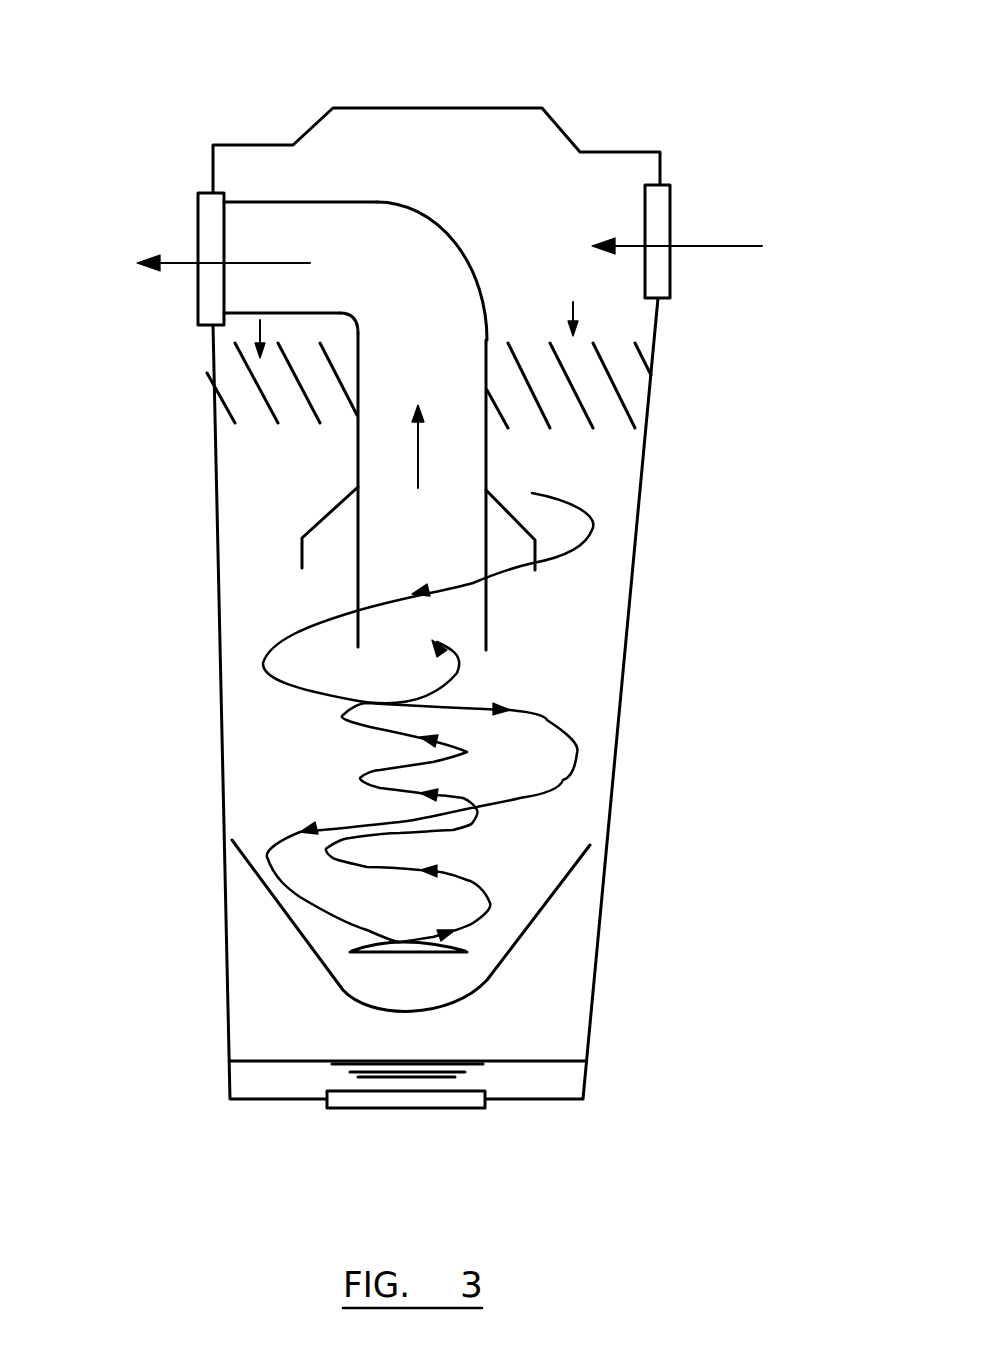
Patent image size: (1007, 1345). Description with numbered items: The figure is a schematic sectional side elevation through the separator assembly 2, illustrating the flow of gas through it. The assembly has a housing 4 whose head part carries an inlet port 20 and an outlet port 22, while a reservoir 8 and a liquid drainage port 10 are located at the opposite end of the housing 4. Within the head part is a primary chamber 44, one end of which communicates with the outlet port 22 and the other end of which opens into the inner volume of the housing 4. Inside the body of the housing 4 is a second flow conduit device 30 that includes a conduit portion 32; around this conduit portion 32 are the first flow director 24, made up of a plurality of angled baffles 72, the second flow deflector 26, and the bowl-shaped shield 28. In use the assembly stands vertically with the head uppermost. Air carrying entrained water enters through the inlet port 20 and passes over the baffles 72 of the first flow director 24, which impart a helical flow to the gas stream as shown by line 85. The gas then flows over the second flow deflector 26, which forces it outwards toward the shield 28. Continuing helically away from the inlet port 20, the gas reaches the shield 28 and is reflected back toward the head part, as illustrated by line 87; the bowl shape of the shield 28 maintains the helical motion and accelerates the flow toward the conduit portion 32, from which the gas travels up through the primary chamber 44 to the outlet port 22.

The separator assembly 2 is at (597, 116).
The housing 4 is at (655, 624).
The reservoir 8 is at (537, 1080).
The liquid drainage port 10 is at (383, 1097).
The inlet port 20 is at (660, 213).
The outlet port 22 is at (210, 240).
The first flow director 24 is at (645, 358).
The second flow deflector 26 is at (503, 505).
The shield 28 is at (543, 912).
The second flow conduit device 30 is at (443, 232).
The conduit portion 32 is at (357, 463).
The primary chamber 44 is at (278, 228).
The baffles 72 is at (260, 390).
The line illustrating helical flow 85 is at (263, 663).
The line illustrating reflected flow 87 is at (400, 868).